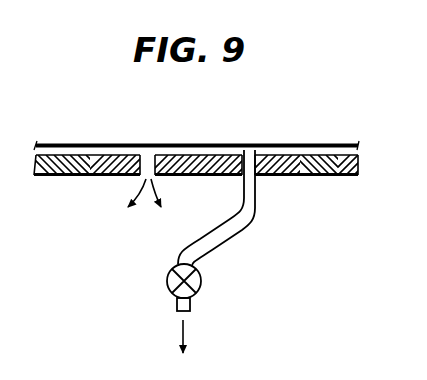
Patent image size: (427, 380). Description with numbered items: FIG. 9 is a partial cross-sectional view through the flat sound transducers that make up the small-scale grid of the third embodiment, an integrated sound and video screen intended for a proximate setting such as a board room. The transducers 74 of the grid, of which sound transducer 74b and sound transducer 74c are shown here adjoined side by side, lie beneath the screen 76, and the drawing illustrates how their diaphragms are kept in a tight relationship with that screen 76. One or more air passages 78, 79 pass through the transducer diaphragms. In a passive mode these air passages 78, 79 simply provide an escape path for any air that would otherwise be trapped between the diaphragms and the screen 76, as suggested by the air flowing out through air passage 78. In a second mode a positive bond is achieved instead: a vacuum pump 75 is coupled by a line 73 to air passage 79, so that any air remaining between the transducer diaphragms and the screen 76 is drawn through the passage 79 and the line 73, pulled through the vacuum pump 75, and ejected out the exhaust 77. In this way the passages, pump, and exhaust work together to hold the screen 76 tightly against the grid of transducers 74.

The tube 73 is at (237, 222).
The panel 74 is at (57, 177).
The sound transducer 74b is at (208, 176).
The sound transducer 74c is at (328, 176).
The vacuum pump 75 is at (201, 281).
The screen 76 is at (316, 145).
The exhaust 77 is at (190, 304).
The air passage 78 is at (148, 154).
The air passage 79 is at (250, 165).